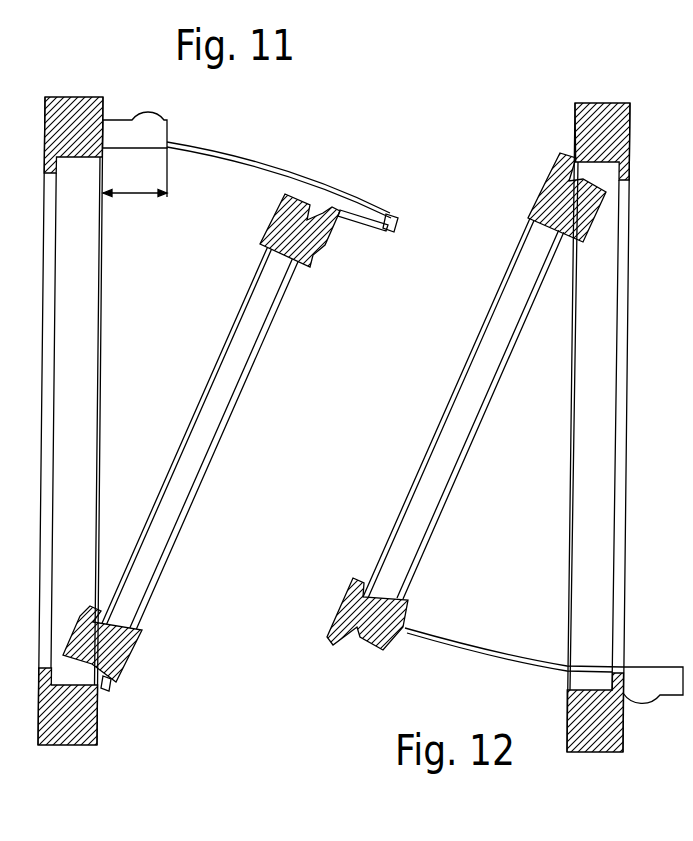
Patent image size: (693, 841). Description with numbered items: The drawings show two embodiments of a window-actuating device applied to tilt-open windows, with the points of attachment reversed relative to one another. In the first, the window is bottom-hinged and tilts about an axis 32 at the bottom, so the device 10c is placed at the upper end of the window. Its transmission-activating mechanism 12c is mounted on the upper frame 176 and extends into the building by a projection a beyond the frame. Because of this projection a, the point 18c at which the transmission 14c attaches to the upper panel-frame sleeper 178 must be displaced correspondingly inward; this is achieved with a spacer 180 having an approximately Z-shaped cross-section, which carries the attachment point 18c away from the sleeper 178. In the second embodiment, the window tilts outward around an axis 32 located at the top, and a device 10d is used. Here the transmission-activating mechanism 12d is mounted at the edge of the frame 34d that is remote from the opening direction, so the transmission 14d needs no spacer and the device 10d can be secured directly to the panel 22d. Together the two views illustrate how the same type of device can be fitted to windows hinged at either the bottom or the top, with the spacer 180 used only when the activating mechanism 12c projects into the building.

In FIG. 11, the upper frame 176 is at (80, 104).
In FIG. 11, the transmission-activating mechanism 12c is at (122, 116).
In FIG. 11, the projection a is at (140, 198).
In FIG. 11, the device 10c is at (279, 154).
In FIG. 11, the transmission 14c is at (245, 160).
In FIG. 11, the point of attachment 18c is at (393, 216).
In FIG. 11, the spacer 180 is at (360, 220).
In FIG. 11, the upper panel-frame sleeper 178 is at (320, 258).
In FIG. 11, the axis 32 is at (111, 690).
In FIG. 12, the axis 32 is at (565, 152).
In FIG. 12, the frame 34d is at (600, 735).
In FIG. 12, the transmission-activating mechanism 12d is at (660, 704).
In FIG. 12, the device 10d is at (514, 639).
In FIG. 12, the transmission 14d is at (457, 654).
In FIG. 12, the panel 22d is at (351, 578).